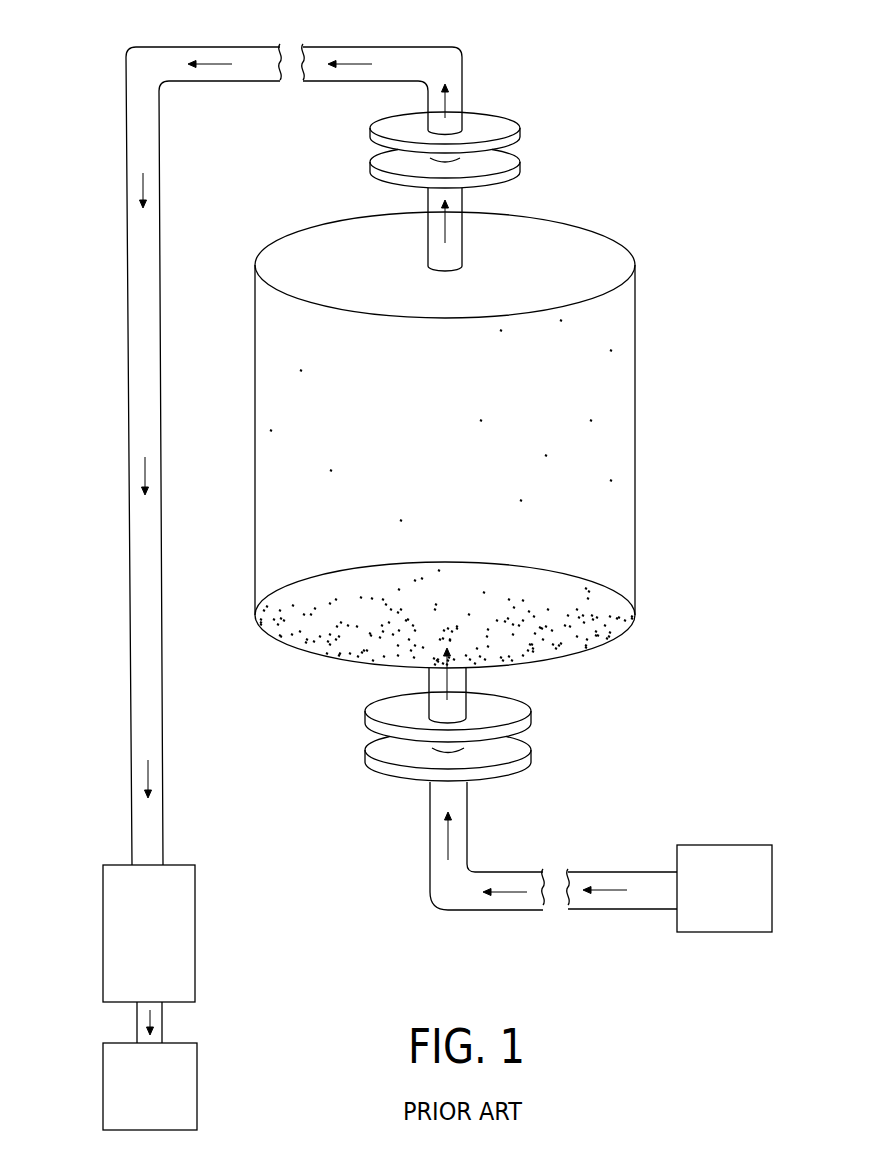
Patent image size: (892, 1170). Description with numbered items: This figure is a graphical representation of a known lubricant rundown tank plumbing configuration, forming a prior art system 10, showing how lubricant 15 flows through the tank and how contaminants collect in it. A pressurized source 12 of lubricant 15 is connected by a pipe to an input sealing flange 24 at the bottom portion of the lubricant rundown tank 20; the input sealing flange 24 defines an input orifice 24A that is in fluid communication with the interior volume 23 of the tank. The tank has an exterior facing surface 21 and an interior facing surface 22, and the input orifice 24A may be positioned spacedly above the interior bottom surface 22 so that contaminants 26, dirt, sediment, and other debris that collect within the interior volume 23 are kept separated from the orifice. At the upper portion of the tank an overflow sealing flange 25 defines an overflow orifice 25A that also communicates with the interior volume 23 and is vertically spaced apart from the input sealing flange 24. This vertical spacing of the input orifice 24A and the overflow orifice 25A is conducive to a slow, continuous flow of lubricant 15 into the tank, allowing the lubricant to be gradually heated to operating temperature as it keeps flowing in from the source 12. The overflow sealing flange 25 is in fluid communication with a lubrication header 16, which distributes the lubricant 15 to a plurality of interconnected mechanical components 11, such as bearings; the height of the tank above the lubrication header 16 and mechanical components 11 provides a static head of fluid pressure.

The prior art system 10 is at (183, 1086).
The interconnected mechanical components 11 is at (139, 1099).
The pressurized source 12 is at (714, 899).
The lubricant 15 is at (353, 62).
The lubrication header 16 is at (137, 951).
The lubricant rundown tank 20 is at (636, 392).
The exterior facing surface 21 is at (610, 519).
The interior facing surface 22 is at (289, 498).
The interior volume 23 is at (537, 375).
The input sealing flange 24 is at (500, 708).
The input orifice 24A is at (473, 598).
The overflow sealing flange 25 is at (498, 172).
The overflow orifice 25A is at (463, 228).
The contaminants 26 is at (348, 476).